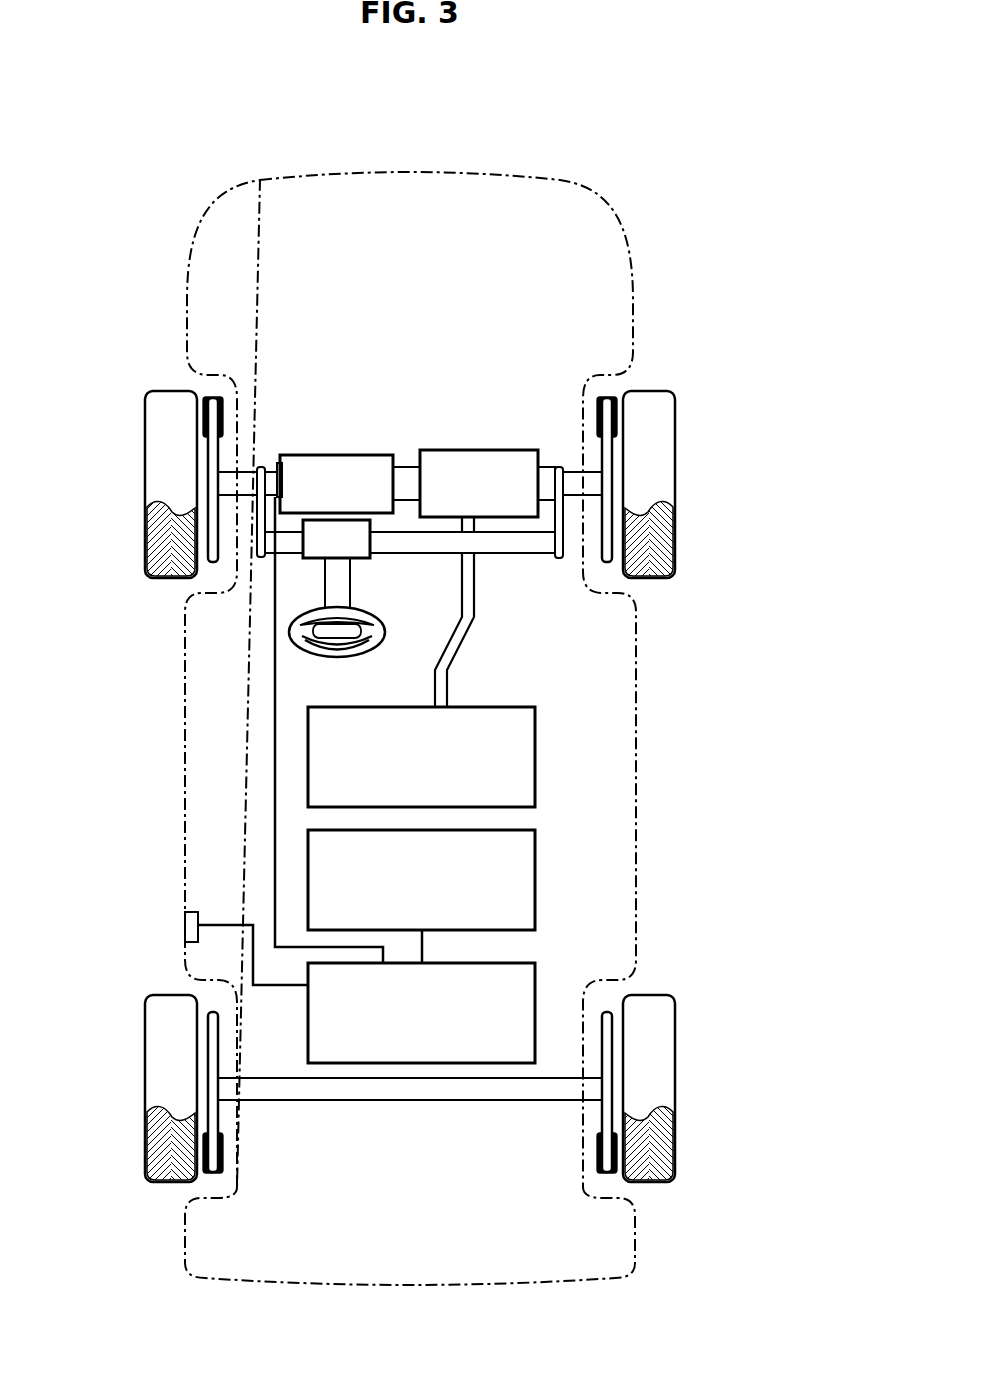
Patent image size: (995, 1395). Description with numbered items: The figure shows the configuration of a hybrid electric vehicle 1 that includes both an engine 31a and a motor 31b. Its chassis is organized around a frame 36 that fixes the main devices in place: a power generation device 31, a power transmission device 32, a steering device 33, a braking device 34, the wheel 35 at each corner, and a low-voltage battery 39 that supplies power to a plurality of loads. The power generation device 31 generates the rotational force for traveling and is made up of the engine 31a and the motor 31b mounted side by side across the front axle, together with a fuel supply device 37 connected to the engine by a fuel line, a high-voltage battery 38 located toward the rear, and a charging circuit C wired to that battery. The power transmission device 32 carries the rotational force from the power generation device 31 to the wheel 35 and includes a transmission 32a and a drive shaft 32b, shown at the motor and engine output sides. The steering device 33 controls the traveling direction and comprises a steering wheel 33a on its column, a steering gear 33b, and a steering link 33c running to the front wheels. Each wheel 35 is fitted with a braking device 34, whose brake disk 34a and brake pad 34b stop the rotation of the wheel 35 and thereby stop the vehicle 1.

The vehicle 1 is at (130, 97).
The power generation device 31 is at (409, 428).
The engine 31a is at (479, 453).
The motor 31b is at (337, 455).
The power transmission device 32 is at (474, 558).
The transmission 32a is at (405, 488).
The drive shaft 32b is at (530, 537).
The steering device 33 is at (303, 623).
The steering wheel 33a is at (303, 648).
The steering gear 33b is at (273, 547).
The steering link 33c is at (303, 542).
The braking device 34 is at (410, 785).
The brake disk 34a is at (212, 488).
The brake pad 34b is at (188, 394).
The wheel 35 is at (148, 543).
The frame 36 is at (185, 1240).
The fuel supply device 37 is at (538, 757).
The high-voltage battery 38 is at (538, 972).
The low-voltage battery 39 is at (538, 880).
The charging circuit C is at (185, 927).